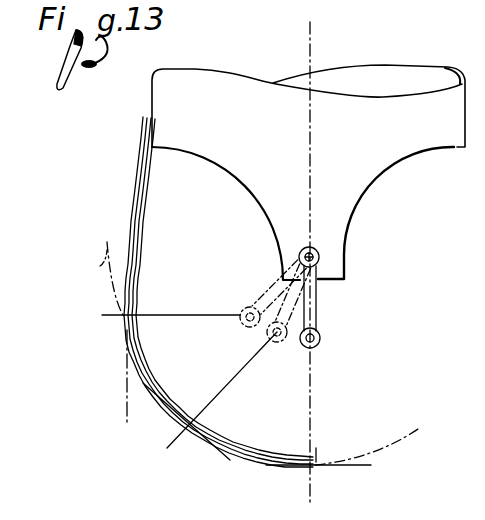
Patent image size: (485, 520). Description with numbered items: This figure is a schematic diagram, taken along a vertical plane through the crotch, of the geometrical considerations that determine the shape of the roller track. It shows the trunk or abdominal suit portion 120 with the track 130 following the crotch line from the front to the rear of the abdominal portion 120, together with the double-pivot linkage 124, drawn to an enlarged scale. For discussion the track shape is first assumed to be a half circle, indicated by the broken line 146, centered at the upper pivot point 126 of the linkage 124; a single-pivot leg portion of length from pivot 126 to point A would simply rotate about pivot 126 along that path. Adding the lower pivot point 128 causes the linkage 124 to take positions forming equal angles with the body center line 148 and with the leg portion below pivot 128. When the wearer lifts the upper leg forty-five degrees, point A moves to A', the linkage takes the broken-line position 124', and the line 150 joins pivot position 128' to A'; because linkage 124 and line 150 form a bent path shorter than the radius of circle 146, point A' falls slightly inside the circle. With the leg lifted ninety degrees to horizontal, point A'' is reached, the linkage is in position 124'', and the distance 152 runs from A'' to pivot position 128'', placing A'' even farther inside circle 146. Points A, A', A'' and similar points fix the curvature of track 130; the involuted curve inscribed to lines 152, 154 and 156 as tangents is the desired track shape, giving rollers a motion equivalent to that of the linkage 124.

The abdominal suit portion 120 is at (316, 153).
The linkage 124 is at (340, 298).
The linkage position 124' is at (263, 306).
The linkage position 124'' is at (259, 282).
The upper pivot point 126 is at (319, 258).
The lower pivot point 128 is at (343, 330).
The pivot position 128' is at (238, 348).
The pivot position 128'' is at (228, 300).
The track 130 is at (137, 212).
The broken line circle 146 is at (100, 266).
The body center line 148 is at (319, 63).
The line 150 is at (242, 373).
The distance 152 is at (178, 316).
The line 154 is at (229, 463).
The line 156 is at (126, 388).
The point A is at (296, 488).
The point A' is at (180, 455).
The point A'' is at (99, 336).